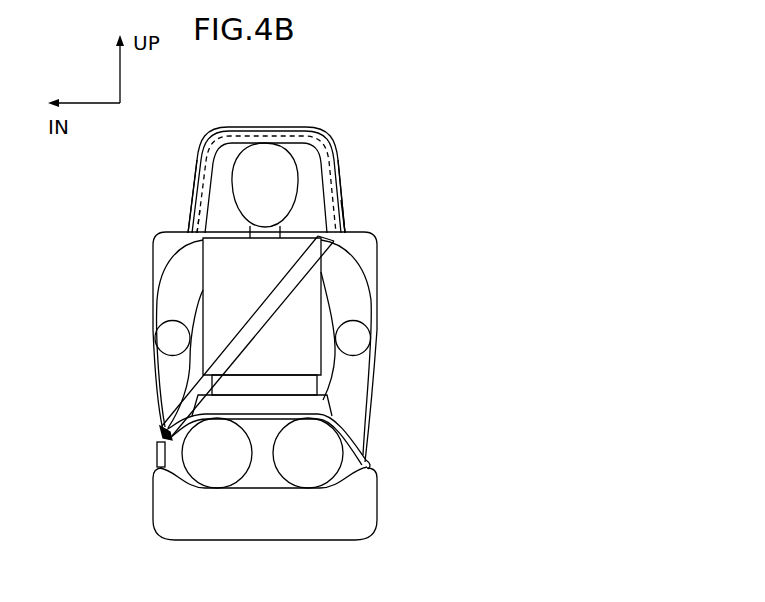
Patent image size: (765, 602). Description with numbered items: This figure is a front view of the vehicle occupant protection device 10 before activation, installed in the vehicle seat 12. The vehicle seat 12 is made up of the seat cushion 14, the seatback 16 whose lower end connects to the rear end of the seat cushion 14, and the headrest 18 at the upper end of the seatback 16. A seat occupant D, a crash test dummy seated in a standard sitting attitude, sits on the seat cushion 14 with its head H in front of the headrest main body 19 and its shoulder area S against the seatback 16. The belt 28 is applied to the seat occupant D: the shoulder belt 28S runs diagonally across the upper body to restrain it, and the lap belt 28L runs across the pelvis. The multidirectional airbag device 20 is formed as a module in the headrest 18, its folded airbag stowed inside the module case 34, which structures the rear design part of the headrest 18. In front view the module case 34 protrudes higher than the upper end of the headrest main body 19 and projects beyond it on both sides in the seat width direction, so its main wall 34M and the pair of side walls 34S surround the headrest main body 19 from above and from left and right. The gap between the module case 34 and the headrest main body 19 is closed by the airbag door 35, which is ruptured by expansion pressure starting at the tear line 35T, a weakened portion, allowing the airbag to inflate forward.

The vehicle occupant protection device 10 is at (455, 165).
The vehicle seat 12 is at (375, 297).
The seat cushion 14 is at (355, 510).
The seatback 16 is at (358, 383).
The headrest 18 is at (425, 84).
The headrest main body 19 is at (330, 133).
The multidirectional airbag device 20 is at (345, 210).
The module case 34 is at (342, 170).
The main wall 34M is at (307, 160).
The side walls 34S is at (193, 198).
The airbag door 35 is at (233, 131).
The tear line 35T is at (202, 183).
The belt 28 is at (268, 333).
The shoulder belt 28S is at (273, 298).
The lap belt 28L is at (255, 417).
The seat occupant D is at (360, 257).
The head H is at (263, 157).
The shoulder area S is at (322, 271).